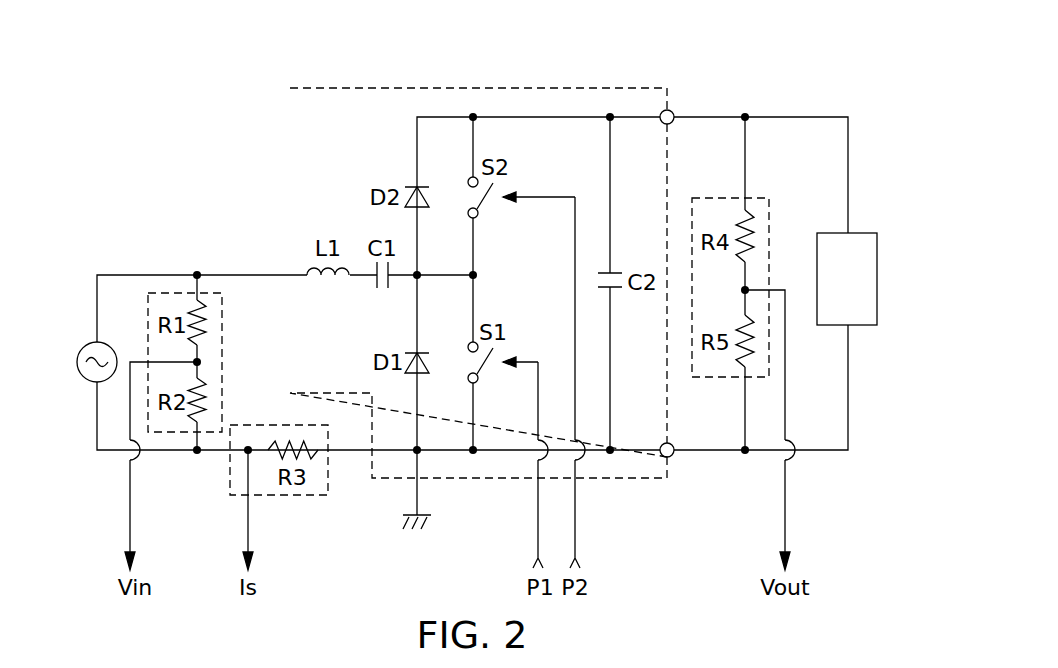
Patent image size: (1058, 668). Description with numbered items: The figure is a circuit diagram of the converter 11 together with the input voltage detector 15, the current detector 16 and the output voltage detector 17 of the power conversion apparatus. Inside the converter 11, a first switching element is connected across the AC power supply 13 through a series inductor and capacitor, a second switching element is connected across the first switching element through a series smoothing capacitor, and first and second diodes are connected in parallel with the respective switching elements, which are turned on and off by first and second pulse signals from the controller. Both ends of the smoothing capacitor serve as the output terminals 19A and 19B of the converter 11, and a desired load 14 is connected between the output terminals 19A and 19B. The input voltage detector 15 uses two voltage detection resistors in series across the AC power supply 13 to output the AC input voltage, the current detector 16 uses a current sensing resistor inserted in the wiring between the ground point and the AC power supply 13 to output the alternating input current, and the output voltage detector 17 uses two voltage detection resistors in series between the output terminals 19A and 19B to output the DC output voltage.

The converter 11 is at (580, 88).
The AC power supply 13 is at (87, 346).
The load 14 is at (872, 233).
The input voltage detector 15 is at (222, 318).
The current detector 16 is at (310, 495).
The output voltage detector 17 is at (715, 198).
The output terminal 19A is at (674, 109).
The output terminal 19B is at (672, 457).